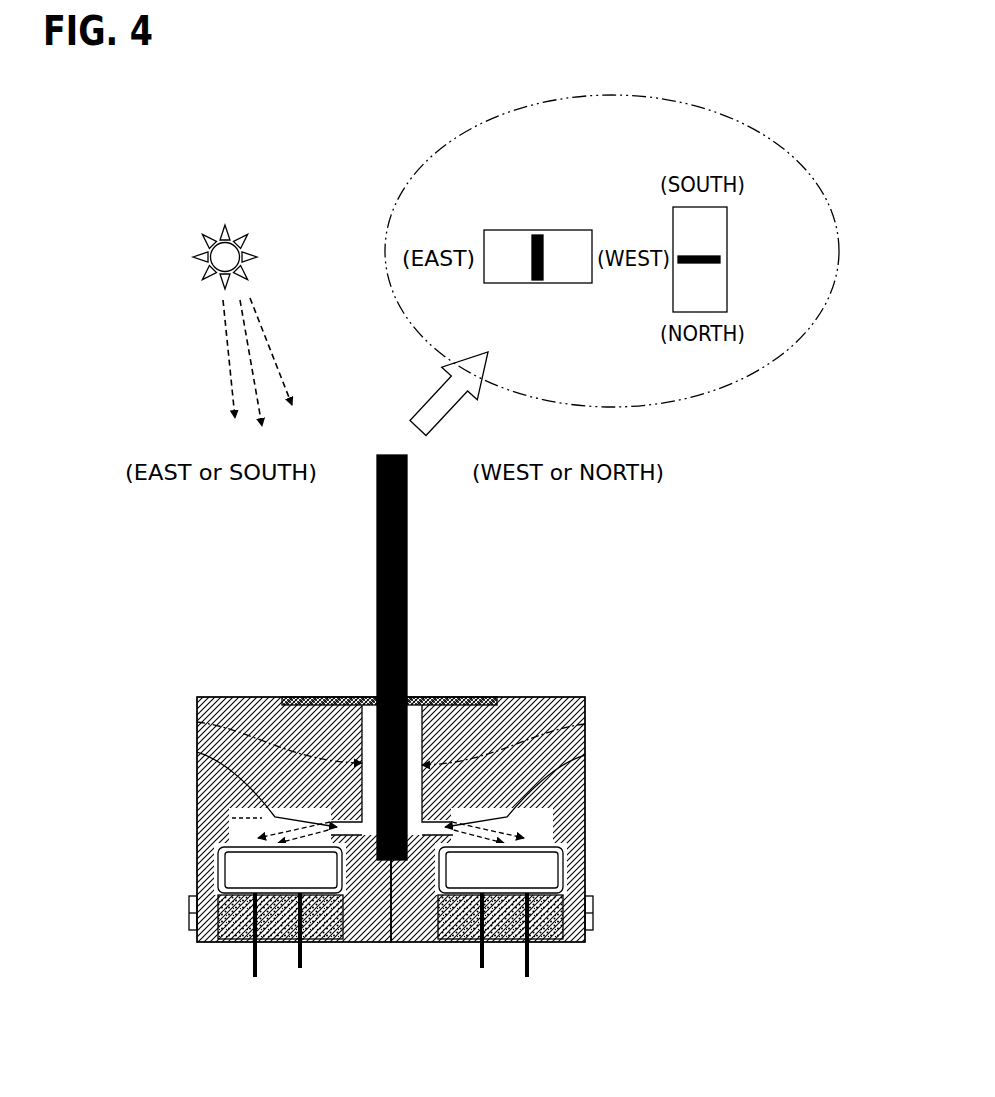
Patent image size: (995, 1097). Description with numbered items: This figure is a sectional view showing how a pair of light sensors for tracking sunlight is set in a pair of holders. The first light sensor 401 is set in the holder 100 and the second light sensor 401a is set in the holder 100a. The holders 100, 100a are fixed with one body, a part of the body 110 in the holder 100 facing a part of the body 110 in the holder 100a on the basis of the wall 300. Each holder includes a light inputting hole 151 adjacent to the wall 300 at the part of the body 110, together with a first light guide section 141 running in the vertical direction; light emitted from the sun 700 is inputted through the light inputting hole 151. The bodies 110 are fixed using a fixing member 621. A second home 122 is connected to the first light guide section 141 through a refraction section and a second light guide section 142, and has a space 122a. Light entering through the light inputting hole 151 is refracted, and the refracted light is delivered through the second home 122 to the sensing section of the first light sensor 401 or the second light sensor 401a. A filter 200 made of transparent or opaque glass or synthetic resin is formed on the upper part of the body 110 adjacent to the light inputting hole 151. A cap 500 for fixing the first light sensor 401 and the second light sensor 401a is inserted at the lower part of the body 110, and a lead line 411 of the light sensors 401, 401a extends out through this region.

The holder 100 is at (168, 672).
The holder 100a is at (604, 672).
The body 110 is at (197, 870).
The second home 122 is at (240, 833).
The space 122a is at (230, 818).
The first light guide section 141 is at (197, 722).
The second light guide section 142 is at (197, 755).
The light inputting hole 151 is at (370, 686).
The filter 200 is at (315, 697).
The wall 300 is at (377, 572).
The first light sensor 401 is at (280, 869).
The second light sensor 401a is at (501, 869).
The lead line 411 is at (252, 966).
The cap 500 is at (276, 943).
The fixing member 621 is at (189, 912).
The sun 700 is at (250, 251).